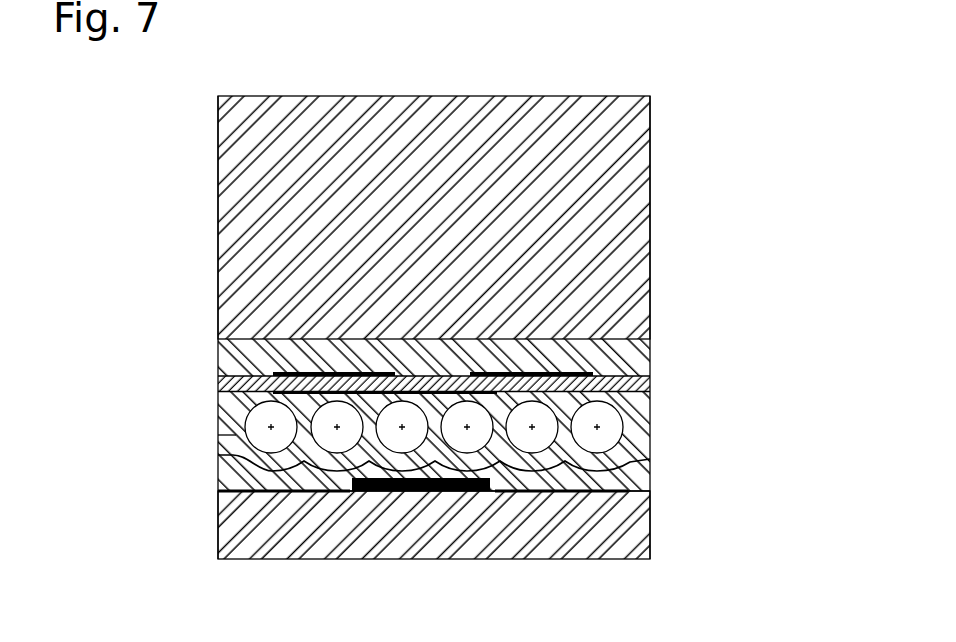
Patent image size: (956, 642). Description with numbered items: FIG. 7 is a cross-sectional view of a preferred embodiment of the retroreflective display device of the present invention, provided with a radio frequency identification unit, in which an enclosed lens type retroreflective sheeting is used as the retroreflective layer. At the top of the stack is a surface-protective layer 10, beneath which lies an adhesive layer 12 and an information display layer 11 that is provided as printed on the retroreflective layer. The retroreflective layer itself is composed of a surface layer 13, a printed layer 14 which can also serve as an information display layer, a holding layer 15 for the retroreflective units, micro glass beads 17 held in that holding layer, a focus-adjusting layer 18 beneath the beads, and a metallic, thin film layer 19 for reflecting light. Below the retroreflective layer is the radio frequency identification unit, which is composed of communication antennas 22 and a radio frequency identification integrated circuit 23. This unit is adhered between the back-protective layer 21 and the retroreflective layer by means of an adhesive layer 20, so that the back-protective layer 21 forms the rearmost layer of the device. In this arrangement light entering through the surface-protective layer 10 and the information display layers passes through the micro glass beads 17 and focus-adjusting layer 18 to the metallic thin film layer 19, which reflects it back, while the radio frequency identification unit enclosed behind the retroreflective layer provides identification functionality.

The surface-protective layer 10 is at (643, 224).
The printed layer 14 is at (571, 334).
The information display layer 11 is at (567, 380).
The adhesive layer 12 is at (642, 355).
The surface layer 13 is at (643, 388).
The holding layer 15 is at (643, 408).
The micro glass beads 17 is at (612, 438).
The focus-adjusting layer 18 is at (612, 462).
The metallic thin film layer 19 is at (597, 482).
The adhesive layer 20 is at (605, 491).
The back-protective layer 21 is at (600, 537).
The communication antennas 22 is at (310, 492).
The radio frequency identification integrated circuit 23 is at (462, 490).